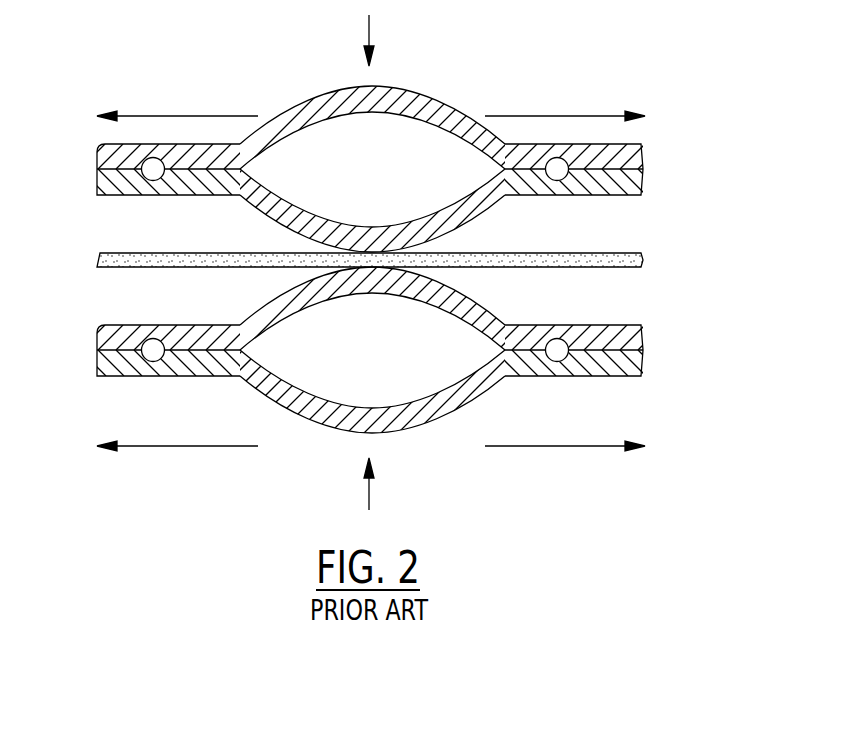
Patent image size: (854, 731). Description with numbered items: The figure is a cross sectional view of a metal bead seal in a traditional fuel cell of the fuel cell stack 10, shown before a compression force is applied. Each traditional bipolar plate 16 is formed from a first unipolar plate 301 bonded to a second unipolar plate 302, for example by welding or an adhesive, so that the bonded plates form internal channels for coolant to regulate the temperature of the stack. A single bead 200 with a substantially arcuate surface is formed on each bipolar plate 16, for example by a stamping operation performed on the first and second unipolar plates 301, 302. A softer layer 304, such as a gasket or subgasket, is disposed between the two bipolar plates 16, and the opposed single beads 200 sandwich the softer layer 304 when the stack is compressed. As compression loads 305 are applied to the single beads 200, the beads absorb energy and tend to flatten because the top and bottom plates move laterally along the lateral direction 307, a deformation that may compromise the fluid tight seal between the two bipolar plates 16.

The fuel cell stack 10 is at (397, 228).
The bipolar plate 16 is at (95, 168).
The single bead 200 is at (283, 110).
The first unipolar plate 301 is at (642, 148).
The second unipolar plate 302 is at (640, 183).
The softer layer 304 is at (630, 262).
The compression loads 305 is at (369, 33).
The lateral direction 307 is at (172, 115).